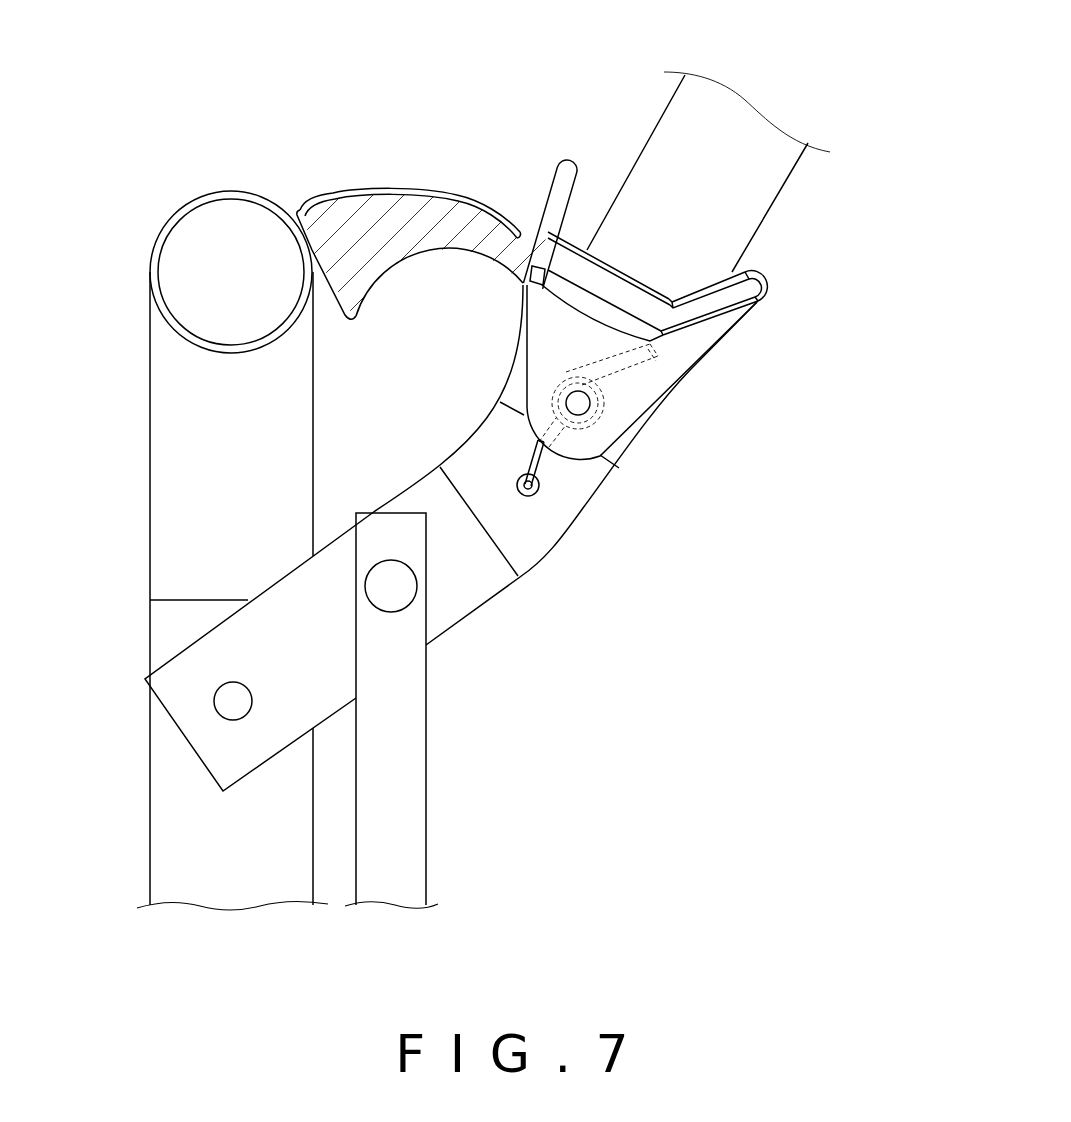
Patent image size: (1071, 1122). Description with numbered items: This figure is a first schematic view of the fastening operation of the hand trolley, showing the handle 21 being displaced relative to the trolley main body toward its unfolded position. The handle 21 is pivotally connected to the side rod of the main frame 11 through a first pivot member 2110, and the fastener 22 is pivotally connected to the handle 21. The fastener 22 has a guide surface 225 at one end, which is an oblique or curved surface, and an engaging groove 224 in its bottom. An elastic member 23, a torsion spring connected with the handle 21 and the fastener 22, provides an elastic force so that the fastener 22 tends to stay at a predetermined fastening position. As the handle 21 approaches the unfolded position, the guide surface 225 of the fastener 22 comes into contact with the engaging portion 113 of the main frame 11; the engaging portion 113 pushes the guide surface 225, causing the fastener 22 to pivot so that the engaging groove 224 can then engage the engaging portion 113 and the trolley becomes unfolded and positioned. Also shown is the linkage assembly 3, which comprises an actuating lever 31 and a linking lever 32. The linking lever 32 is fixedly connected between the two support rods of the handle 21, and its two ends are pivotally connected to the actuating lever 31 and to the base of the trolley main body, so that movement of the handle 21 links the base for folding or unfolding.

The main frame 11 is at (144, 404).
The engaging portion 113 is at (208, 190).
The handle 21 is at (632, 128).
The fastener 22 is at (463, 181).
The guide surface 225 is at (352, 258).
The engaging groove 224 is at (412, 262).
The elastic member 23 is at (546, 460).
The linkage assembly 3 is at (464, 710).
The actuating lever 31 is at (378, 565).
The linking lever 32 is at (410, 741).
The first pivot member 2110 is at (225, 703).